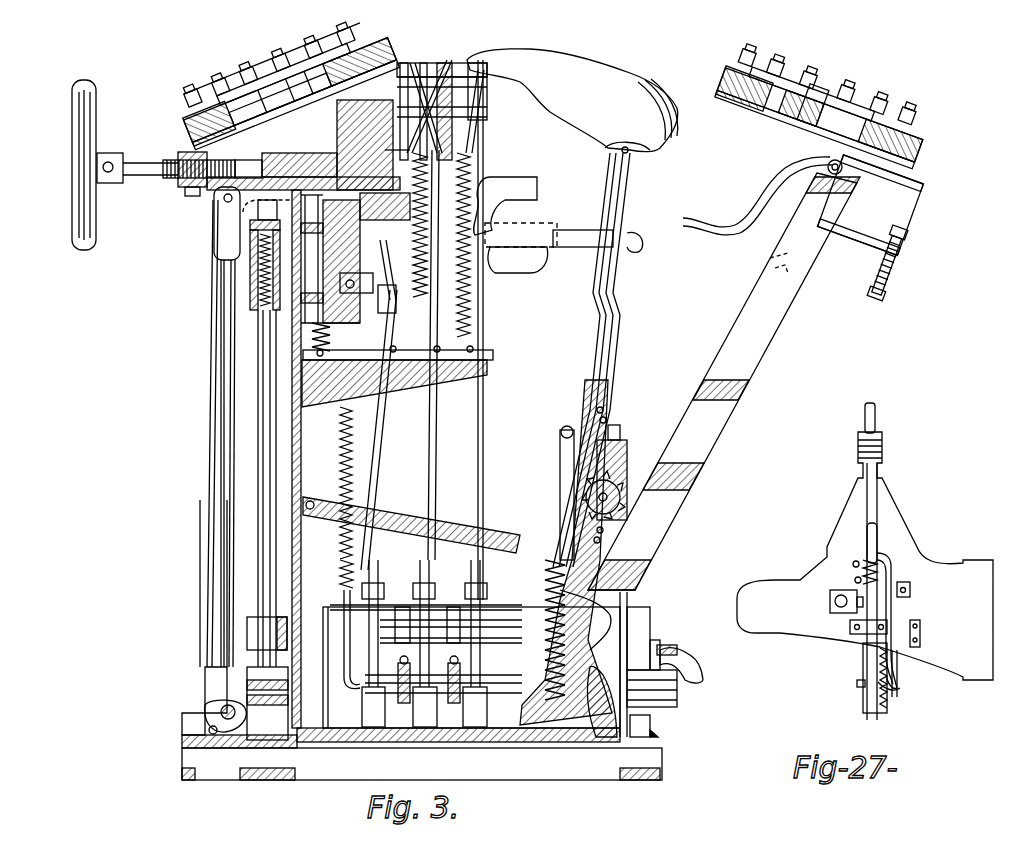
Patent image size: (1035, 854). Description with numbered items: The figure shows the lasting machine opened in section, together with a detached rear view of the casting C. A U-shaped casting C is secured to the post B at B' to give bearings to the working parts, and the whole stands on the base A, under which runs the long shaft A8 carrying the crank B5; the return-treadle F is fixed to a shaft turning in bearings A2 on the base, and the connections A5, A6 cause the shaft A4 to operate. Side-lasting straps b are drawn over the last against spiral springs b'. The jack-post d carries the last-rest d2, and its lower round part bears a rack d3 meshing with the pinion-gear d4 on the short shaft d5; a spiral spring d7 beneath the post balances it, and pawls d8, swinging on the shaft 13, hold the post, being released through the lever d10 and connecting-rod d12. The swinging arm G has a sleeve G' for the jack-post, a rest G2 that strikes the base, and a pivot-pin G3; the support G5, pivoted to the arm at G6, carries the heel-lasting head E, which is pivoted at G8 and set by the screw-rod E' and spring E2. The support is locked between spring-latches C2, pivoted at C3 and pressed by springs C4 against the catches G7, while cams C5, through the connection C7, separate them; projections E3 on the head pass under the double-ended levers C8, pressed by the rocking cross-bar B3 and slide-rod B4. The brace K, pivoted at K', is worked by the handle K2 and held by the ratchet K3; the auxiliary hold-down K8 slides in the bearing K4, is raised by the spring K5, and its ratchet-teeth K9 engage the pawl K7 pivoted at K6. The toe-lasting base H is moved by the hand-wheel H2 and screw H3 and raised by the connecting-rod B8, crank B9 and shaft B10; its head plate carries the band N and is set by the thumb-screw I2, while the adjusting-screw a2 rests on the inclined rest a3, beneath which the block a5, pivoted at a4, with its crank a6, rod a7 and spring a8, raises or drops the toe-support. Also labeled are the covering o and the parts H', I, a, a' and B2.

In FIG. 3, the base H is at (182, 153).
In FIG. 3, the hand-wheel H2 is at (95, 165).
In FIG. 3, the screw H3 is at (188, 187).
In FIG. 3, the arm H' is at (446, 134).
In FIG. 3, the type bar assembly I is at (285, 80).
In FIG. 3, the thumb-screw I2 is at (247, 142).
In FIG. 3, the lasting-band N is at (380, 55).
In FIG. 3, the frictional covering o is at (397, 47).
In FIG. 3, the frame block a is at (299, 138).
In FIG. 3, the bracket a' is at (346, 145).
In FIG. 3, the adjusting-screw a2 is at (375, 197).
In FIG. 3, the inclined rest a3 is at (440, 165).
In FIG. 3, the pivot a4 is at (350, 293).
In FIG. 3, the cam or block a5 is at (385, 285).
In FIG. 3, the crank a6 is at (485, 355).
In FIG. 3, the rod a7 is at (320, 351).
In FIG. 3, the spring a8 is at (340, 453).
In FIG. 3, the side-lasting straps b is at (454, 98).
In FIG. 3, the spiral springs b' is at (348, 330).
In FIG. 3, the post B is at (198, 433).
In FIG. 3, the securing point B' is at (238, 433).
In FIG. 3, the plate B2 is at (394, 385).
In FIG. 3, the rocking cross-bar B3 is at (214, 230).
In FIG. 3, the slide-rod B4 is at (238, 415).
In FIG. 3, the crank B5 is at (275, 780).
In FIG. 3, the connecting-rod B8 is at (215, 600).
In FIG. 3, the crank B9 is at (209, 730).
In FIG. 3, the shaft B10 is at (205, 712).
In FIG. 3, the U-shaped casting C is at (520, 255).
In FIG. 3, the spring-latches C2 is at (520, 273).
In FIG. 3, the latch pivot C3 is at (480, 228).
In FIG. 3, the springs C4 is at (445, 487).
In FIG. 3, the cams C5 is at (470, 300).
In FIG. 3, the connection C7 is at (380, 445).
In FIG. 3, the double-ended levers C8 is at (537, 188).
In FIG. 3, the jack-post d is at (612, 297).
In FIG. 3, the last-rest d2 is at (633, 152).
In FIG. 3, the rack d3 is at (605, 412).
In FIG. 3, the pinion-gear d4 is at (588, 490).
In FIG. 3, the short shaft d5 is at (586, 497).
In FIG. 3, the spiral spring d7 is at (548, 575).
In FIG. 3, the pawls d8 is at (627, 470).
In FIG. 3, the lever d10 is at (560, 430).
In FIG. 3, the connecting-rod d12 is at (560, 455).
In FIG. 3, the shaft 13 is at (669, 414).
In FIG. 3, the swinging arm G is at (573, 558).
In FIG. 3, the sleeve G' is at (539, 555).
In FIG. 3, the rest G2 is at (650, 722).
In FIG. 3, the pivot-pin G3 is at (535, 725).
In FIG. 3, the support G5 is at (752, 330).
In FIG. 3, the pivot G6 is at (621, 621).
In FIG. 3, the catches G7 is at (790, 270).
In FIG. 3, the pivot G8 is at (840, 174).
In FIG. 3, the heel-lasting head E is at (824, 104).
In FIG. 3, the adjusting screw-rod E' is at (881, 205).
In FIG. 3, the spring E2 is at (893, 275).
In FIG. 3, the projections E3 is at (758, 196).
In FIG. 3, the base A is at (182, 745).
In FIG. 3, the bearings A2 is at (323, 650).
In FIG. 3, the shaft A4 is at (650, 615).
In FIG. 3, the connection A5 is at (677, 648).
In FIG. 3, the connection A6 is at (655, 640).
In FIG. 3, the long shaft A8 is at (210, 760).
In FIG. 3, the return-treadle F is at (690, 660).
In FIG. 3, the brace K is at (496, 513).
In FIG. 3, the pivot K' is at (411, 525).
In FIG. 27, the handle K2 is at (857, 683).
In FIG. 27, the ratchet K3 is at (890, 705).
In FIG. 27, the bearing K4 is at (880, 503).
In FIG. 27, the spiral spring K5 is at (853, 568).
In FIG. 27, the pivot K6 is at (910, 595).
In FIG. 27, the pawl K7 is at (895, 612).
In FIG. 27, the auxiliary hold-down K8 is at (875, 415).
In FIG. 27, the ratchet-teeth K9 is at (880, 545).